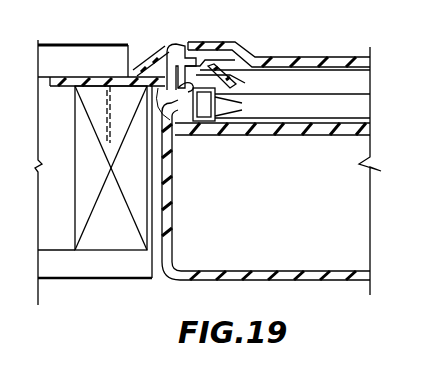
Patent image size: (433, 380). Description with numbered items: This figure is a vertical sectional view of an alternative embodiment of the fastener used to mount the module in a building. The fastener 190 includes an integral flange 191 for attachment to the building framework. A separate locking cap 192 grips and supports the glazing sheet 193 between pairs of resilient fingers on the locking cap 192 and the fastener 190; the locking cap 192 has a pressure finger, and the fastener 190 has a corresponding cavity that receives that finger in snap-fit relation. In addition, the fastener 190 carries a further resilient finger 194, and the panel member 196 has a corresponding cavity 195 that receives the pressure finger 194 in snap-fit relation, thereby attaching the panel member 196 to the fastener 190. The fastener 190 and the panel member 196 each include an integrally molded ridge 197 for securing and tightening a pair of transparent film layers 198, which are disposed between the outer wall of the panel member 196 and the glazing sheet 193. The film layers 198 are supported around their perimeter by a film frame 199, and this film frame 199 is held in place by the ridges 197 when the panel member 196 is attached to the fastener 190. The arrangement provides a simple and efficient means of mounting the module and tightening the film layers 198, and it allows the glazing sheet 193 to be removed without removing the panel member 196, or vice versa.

The fastener 190 is at (235, 78).
The integral flange 191 is at (100, 172).
The locking cap 192 is at (184, 43).
The glazing sheet 193 is at (276, 62).
The resilient finger 194 is at (168, 44).
The cavity 195 is at (171, 146).
The panel member 196 is at (174, 211).
The integrally molded ridge 197 is at (249, 90).
The transparent film layers 198 is at (311, 114).
The film frame 199 is at (227, 110).